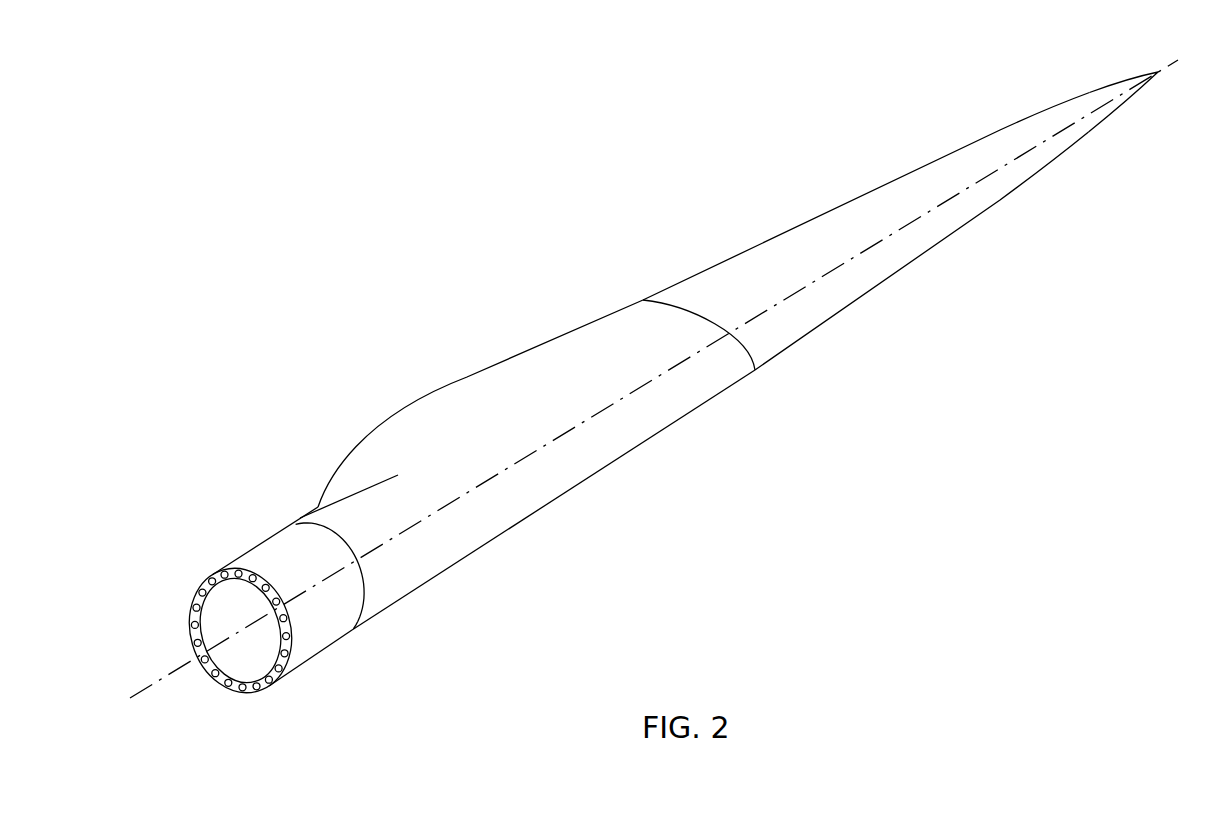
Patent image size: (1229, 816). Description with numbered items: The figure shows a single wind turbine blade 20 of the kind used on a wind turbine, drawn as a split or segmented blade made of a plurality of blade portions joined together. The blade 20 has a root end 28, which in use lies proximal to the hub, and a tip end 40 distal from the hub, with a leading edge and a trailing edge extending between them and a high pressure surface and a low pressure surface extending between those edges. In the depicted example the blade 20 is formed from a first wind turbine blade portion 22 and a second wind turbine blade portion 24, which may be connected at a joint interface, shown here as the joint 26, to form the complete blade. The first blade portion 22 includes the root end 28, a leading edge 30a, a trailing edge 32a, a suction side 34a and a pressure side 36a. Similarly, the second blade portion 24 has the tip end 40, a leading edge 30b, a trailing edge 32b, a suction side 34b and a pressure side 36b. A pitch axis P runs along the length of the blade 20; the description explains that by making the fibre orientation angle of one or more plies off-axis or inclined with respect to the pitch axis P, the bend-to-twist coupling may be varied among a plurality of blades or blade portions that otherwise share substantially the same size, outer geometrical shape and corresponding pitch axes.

The wind turbine blade 20 is at (403, 234).
The first wind turbine blade portion 22 is at (572, 345).
The second wind turbine blade portion 24 is at (801, 243).
The joint 26 is at (629, 280).
The root end 28 is at (333, 634).
The leading edge 30a is at (614, 463).
The leading edge 30b is at (923, 254).
The trailing edge 32a is at (467, 378).
The trailing edge 32b is at (920, 171).
The suction side 34a is at (497, 463).
The suction side 34b is at (883, 252).
The pressure side 36a is at (688, 416).
The pressure side 36b is at (1028, 184).
The tip end 40 is at (1133, 92).
The pitch axis P is at (668, 375).